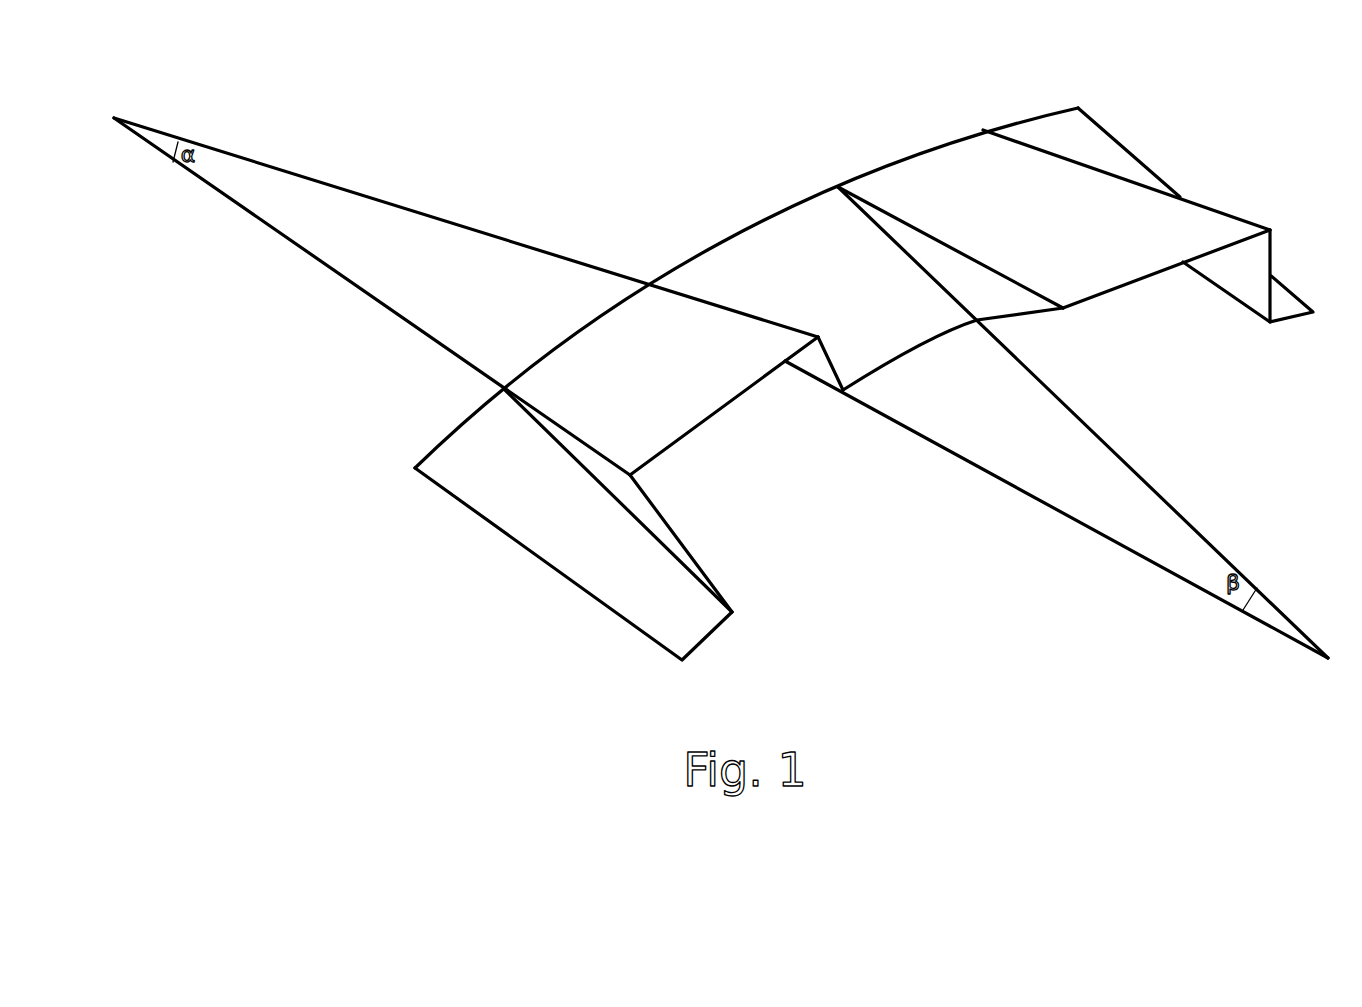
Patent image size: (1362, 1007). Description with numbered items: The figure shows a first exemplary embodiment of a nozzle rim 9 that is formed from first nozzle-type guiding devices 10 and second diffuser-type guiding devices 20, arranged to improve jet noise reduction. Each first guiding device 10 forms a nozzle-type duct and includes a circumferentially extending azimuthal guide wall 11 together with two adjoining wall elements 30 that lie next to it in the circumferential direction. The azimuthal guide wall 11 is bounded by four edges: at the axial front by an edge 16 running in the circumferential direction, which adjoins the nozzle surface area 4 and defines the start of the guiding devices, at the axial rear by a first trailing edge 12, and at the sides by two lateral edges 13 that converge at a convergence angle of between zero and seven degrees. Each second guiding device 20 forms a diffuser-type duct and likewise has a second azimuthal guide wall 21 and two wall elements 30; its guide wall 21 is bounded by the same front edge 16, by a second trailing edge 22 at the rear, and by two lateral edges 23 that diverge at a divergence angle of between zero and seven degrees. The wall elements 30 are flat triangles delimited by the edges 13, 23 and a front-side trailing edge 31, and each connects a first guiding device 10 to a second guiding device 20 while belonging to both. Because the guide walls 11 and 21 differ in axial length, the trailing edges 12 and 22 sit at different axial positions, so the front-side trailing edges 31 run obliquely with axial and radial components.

The nozzle surface area 4 is at (890, 106).
The nozzle rim 9 is at (1172, 90).
The first guiding device 10 is at (727, 165).
The azimuthal guide wall 11 is at (813, 274).
The trailing edge 12 is at (940, 340).
The lateral edge 13 is at (905, 252).
The edge 16 is at (800, 198).
The second guiding device 20 is at (783, 468).
The azimuthal guide wall 21 is at (1037, 222).
The trailing edge 22 is at (697, 430).
The lateral edge 23 is at (900, 218).
The wall element 30 is at (813, 380).
The front-side trailing edge 31 is at (835, 363).